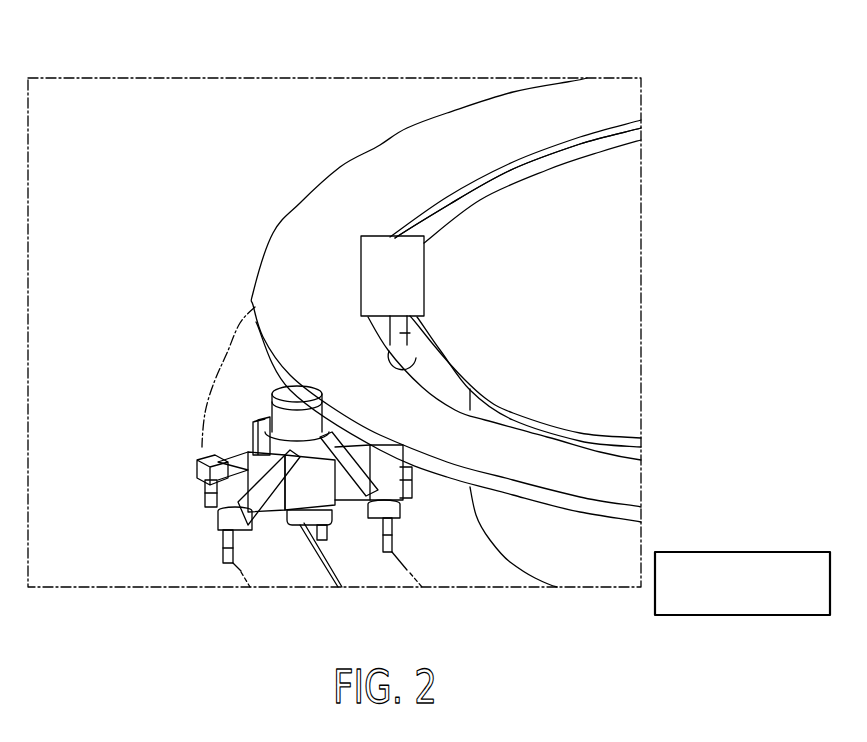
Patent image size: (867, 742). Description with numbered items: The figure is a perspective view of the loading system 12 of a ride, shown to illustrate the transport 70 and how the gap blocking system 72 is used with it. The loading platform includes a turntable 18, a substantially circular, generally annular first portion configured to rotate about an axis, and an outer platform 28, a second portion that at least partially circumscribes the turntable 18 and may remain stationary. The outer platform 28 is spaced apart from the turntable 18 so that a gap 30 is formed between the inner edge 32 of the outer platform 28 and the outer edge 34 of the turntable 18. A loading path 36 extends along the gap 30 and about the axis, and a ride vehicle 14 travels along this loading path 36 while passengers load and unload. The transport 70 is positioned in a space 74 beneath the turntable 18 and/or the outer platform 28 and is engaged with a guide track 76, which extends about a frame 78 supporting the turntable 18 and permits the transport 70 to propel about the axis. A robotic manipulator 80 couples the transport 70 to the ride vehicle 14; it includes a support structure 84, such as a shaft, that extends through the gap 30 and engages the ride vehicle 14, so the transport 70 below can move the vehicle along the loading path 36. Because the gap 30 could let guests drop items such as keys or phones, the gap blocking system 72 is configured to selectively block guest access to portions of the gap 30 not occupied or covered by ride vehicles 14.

The loading system 12 is at (187, 112).
The ride vehicle 14 is at (360, 257).
The turntable 18 is at (615, 263).
The outer platform 28 is at (345, 180).
The gap 30 is at (594, 144).
The inner edge 32 is at (562, 143).
The outer edge 34 is at (582, 153).
The loading path 36 is at (480, 183).
The transport 70 is at (284, 491).
The gap blocking system 72 is at (742, 552).
The space 74 is at (469, 556).
The guide track 76 is at (240, 568).
The frame 78 is at (550, 557).
The robotic manipulator 80 is at (280, 383).
The support structure 84 is at (410, 328).